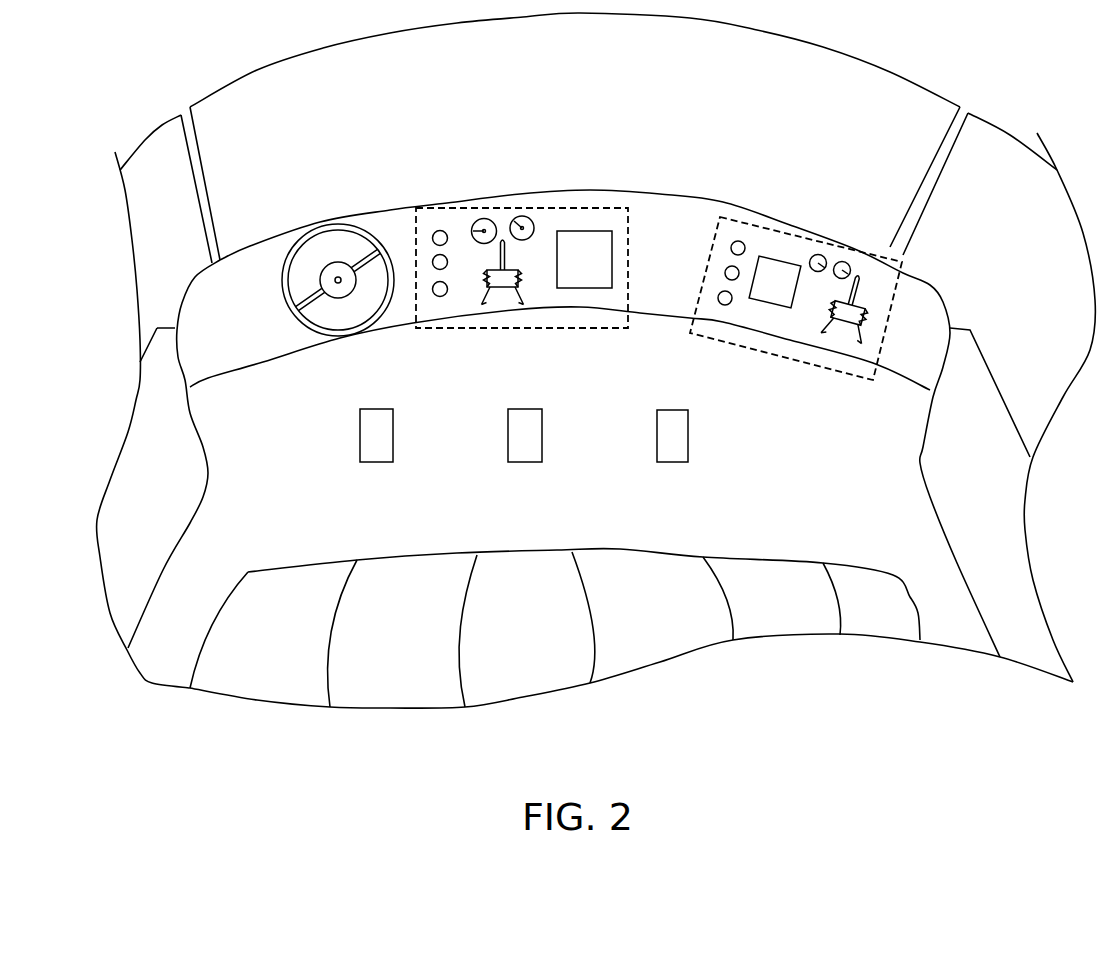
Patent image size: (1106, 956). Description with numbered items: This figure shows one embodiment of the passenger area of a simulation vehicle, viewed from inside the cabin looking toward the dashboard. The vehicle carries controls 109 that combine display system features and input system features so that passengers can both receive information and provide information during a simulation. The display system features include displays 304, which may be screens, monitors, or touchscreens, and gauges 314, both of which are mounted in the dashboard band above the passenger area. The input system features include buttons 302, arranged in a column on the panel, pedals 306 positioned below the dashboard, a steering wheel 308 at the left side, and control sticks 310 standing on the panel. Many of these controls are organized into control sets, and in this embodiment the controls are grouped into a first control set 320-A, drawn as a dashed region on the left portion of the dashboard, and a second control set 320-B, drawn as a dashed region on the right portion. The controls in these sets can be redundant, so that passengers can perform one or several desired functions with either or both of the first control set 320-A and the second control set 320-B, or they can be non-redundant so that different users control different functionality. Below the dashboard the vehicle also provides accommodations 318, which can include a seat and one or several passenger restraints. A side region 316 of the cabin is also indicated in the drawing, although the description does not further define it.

The controls 109 is at (665, 99).
The buttons 302 is at (458, 235).
The displays 304 is at (600, 229).
The pedals 306 is at (380, 409).
The steering wheel 308 is at (295, 313).
The control stick 310 is at (506, 258).
The gauges 314 is at (523, 216).
The side panel 316 is at (981, 413).
The accommodations 318 is at (746, 616).
The first control set 320-A is at (443, 208).
The second control set 320-B is at (735, 220).